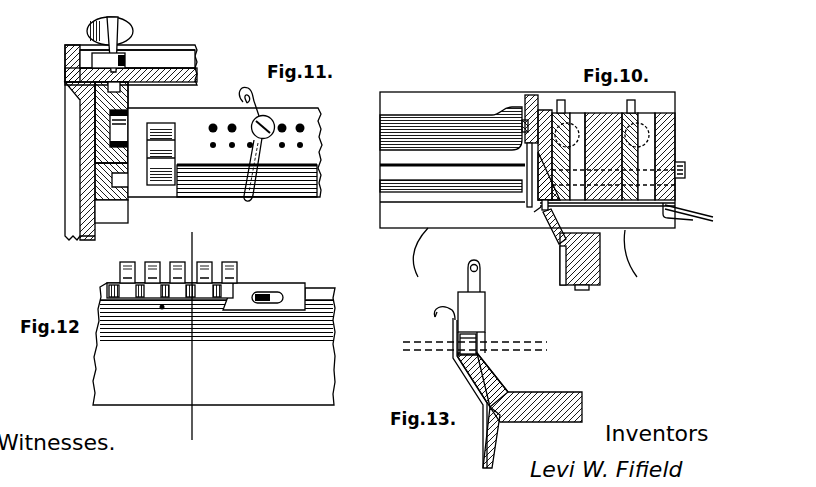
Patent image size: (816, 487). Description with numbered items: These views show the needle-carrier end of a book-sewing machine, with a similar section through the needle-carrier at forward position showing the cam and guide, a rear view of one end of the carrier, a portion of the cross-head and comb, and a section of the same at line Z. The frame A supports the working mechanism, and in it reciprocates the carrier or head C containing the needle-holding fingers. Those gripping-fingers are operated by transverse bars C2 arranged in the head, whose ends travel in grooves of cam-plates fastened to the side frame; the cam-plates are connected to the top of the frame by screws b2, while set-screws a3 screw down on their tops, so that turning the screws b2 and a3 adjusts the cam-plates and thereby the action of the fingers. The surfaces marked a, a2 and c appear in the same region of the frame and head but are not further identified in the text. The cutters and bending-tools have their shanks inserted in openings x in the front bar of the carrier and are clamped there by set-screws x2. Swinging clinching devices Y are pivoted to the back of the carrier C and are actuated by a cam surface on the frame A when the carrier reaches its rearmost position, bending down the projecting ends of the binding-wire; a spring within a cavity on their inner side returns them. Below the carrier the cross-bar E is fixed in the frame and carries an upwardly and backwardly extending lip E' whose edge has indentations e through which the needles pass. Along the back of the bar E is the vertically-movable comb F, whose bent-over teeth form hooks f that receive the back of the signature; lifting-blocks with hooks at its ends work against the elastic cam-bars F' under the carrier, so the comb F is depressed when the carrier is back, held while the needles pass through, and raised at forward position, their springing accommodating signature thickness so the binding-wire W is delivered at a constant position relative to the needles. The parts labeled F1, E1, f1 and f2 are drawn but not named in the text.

In FIG. 11, the frame A is at (123, 142).
In FIG. 10, the frame A is at (527, 184).
In FIG. 11, the barrel a is at (110, 198).
In FIG. 10, the barrel a is at (441, 187).
In FIG. 11, the barrel extension / column a2 is at (128, 100).
In FIG. 10, the barrel extension / column a2 is at (452, 149).
In FIG. 11, the set-screw a3 is at (118, 50).
In FIG. 11, the screw b2 is at (126, 60).
In FIG. 11, the spring block c is at (119, 128).
In FIG. 11, the reciprocating carrier or head C is at (225, 152).
In FIG. 10, the reciprocating carrier or head C is at (606, 158).
In FIG. 10, the transverse bars C2 is at (598, 105).
In FIG. 11, the swinging arms or clinching devices Y is at (256, 153).
In FIG. 10, the swinging arms or clinching devices Y is at (525, 151).
In FIG. 11, the section line Z is at (188, 235).
In FIG. 12, the section line Z is at (186, 346).
In FIG. 10, the openings x is at (678, 219).
In FIG. 10, the set-screw x2 is at (689, 168).
In FIG. 12, the comb or indented plate F is at (160, 281).
In FIG. 13, the comb or indented plate F is at (457, 393).
In FIG. 10, the lever rod F1 is at (686, 209).
In FIG. 10, the spring-guides or elastic cam-bars F' is at (550, 231).
In FIG. 12, the cross-bar or supporting-bed E is at (214, 344).
In FIG. 13, the cross-bar or supporting-bed E is at (529, 410).
In FIG. 10, the lip E' is at (580, 261).
In FIG. 13, the inclined arm E1 is at (490, 373).
In FIG. 12, the indentations or openings e is at (180, 299).
In FIG. 13, the indentations or openings e is at (475, 338).
In FIG. 10, the hooks f is at (537, 212).
In FIG. 12, the hooks f is at (178, 265).
In FIG. 13, the hooks f is at (436, 315).
In FIG. 12, the slotted plate f1 is at (266, 295).
In FIG. 13, the pin f2 is at (477, 307).
In FIG. 13, the binding-wire W is at (465, 346).